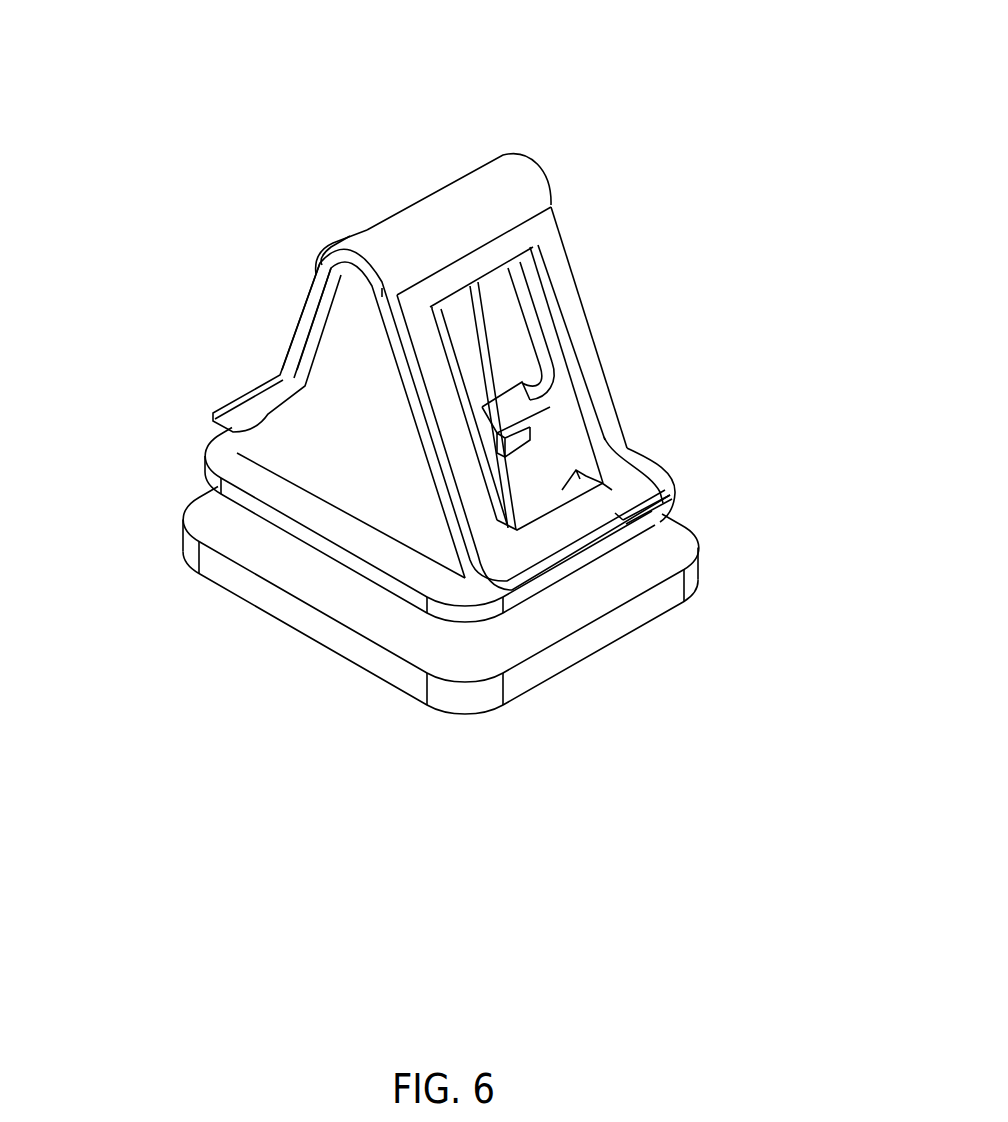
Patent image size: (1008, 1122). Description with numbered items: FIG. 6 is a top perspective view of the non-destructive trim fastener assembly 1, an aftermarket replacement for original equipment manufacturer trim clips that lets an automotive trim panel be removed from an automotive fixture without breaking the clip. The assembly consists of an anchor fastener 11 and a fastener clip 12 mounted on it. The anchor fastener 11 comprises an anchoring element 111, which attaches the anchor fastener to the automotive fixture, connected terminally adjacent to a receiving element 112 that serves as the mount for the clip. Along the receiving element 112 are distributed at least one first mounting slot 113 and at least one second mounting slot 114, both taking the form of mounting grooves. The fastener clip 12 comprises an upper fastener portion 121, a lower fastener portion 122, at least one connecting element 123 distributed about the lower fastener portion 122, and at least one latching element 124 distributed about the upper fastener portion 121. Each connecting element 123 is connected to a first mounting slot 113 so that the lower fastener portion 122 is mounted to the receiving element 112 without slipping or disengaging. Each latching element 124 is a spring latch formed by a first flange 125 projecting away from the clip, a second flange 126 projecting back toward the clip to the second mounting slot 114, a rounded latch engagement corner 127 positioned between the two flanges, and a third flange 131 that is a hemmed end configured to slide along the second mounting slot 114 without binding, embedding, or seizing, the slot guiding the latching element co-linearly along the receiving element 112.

The non-destructive trim fastener assembly 1 is at (522, 78).
The anchor fastener 11 is at (163, 510).
The anchoring element 111 is at (702, 567).
The receiving element 112 is at (266, 468).
The fastener clip 12 is at (561, 164).
The upper fastener portion 121 is at (403, 210).
The lower fastener portion 122 is at (228, 401).
The connecting element 123 is at (668, 488).
The latching element 124 is at (555, 375).
The first flange 125 is at (513, 320).
The second flange 126 is at (524, 445).
The latch engagement corner 127 is at (513, 398).
The first mounting slot 113 is at (527, 298).
The second mounting slot 114 is at (541, 414).
The third flange 131 is at (587, 487).